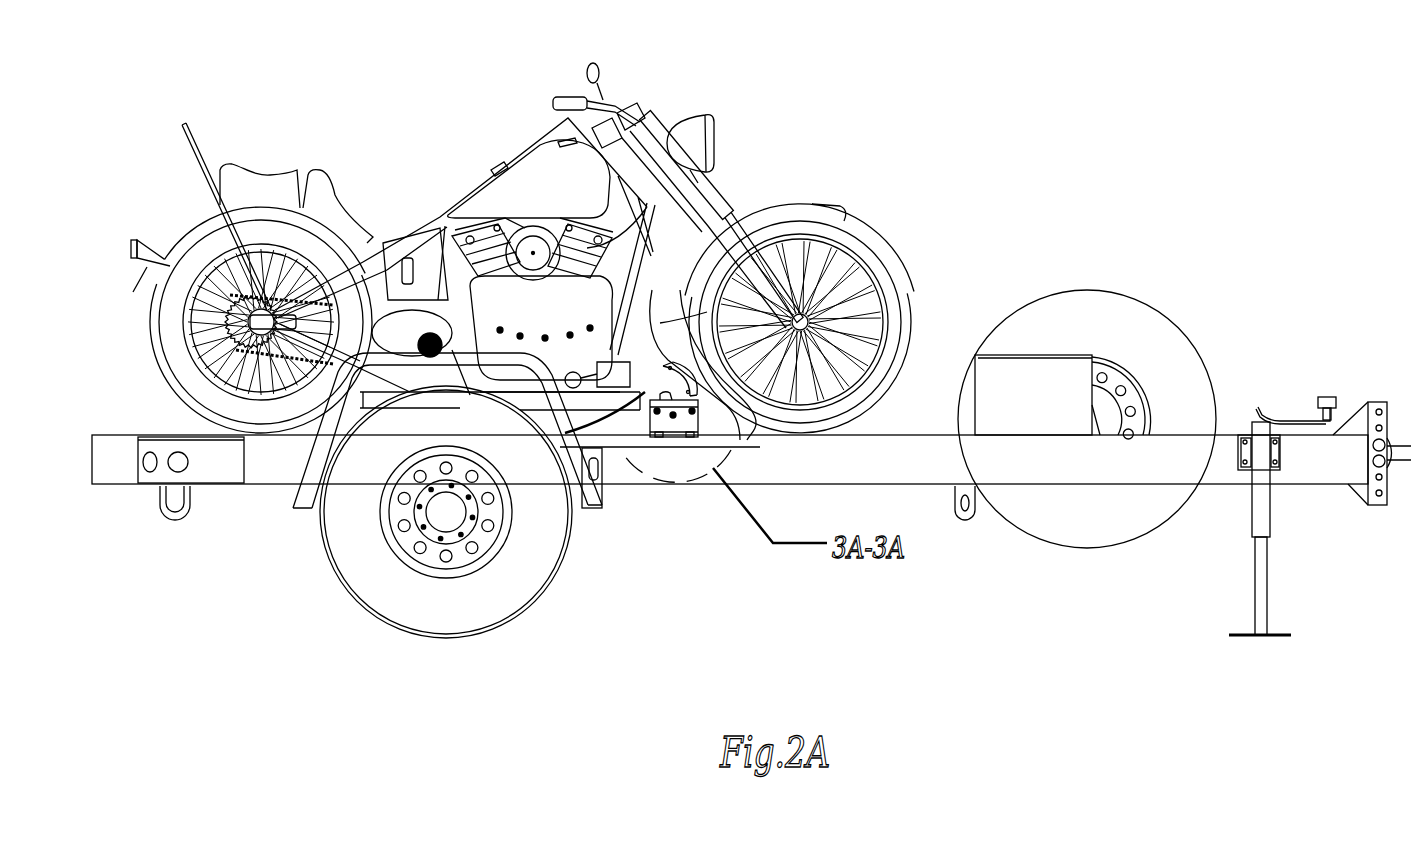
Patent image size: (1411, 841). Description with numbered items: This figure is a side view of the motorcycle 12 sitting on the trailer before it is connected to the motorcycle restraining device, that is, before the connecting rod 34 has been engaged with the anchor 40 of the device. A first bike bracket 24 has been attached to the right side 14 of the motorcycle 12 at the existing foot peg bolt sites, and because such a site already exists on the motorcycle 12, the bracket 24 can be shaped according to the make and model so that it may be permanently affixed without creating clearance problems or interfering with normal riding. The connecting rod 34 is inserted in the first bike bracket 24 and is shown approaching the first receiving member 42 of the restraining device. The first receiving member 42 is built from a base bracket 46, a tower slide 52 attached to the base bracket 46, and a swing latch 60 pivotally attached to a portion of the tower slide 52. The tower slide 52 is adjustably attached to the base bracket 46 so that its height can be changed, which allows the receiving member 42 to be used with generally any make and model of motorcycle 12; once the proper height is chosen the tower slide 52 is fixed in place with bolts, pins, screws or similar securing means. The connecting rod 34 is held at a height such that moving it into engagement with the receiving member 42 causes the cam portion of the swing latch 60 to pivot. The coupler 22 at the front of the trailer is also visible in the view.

The motorcycle 12 is at (522, 248).
The right side 14 is at (498, 197).
The trailer coupler 22 is at (1373, 402).
The first bike bracket 24 is at (588, 438).
The connecting rod 34 is at (600, 406).
The anchor 40 is at (695, 401).
The first receiving member 42 is at (656, 308).
The base bracket 46 is at (703, 423).
The tower slide 52 is at (740, 412).
The swing latch 60 is at (605, 450).